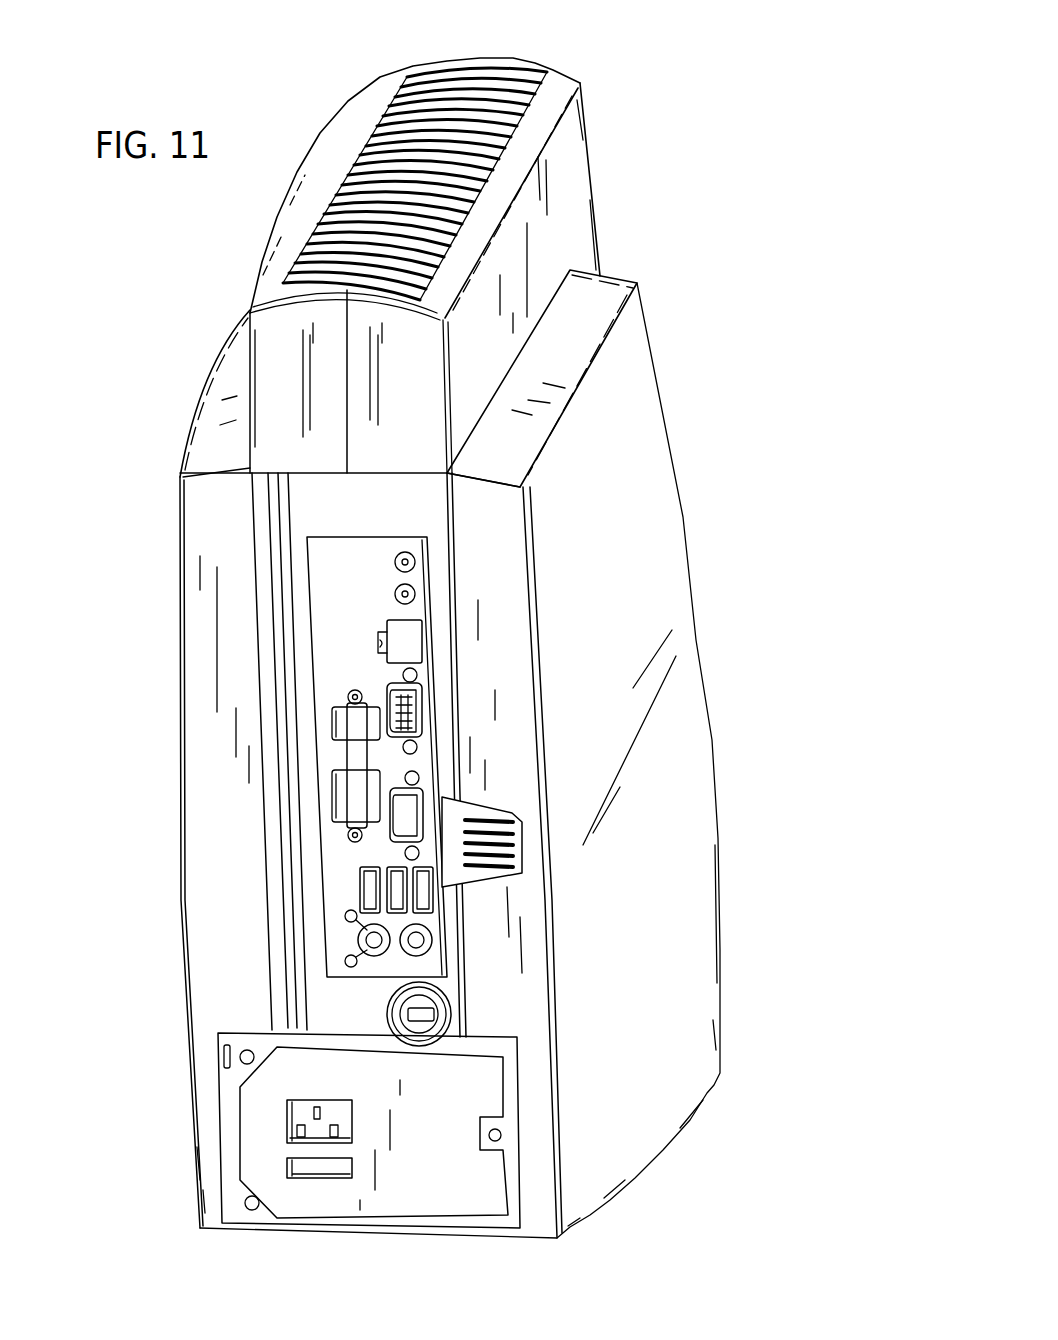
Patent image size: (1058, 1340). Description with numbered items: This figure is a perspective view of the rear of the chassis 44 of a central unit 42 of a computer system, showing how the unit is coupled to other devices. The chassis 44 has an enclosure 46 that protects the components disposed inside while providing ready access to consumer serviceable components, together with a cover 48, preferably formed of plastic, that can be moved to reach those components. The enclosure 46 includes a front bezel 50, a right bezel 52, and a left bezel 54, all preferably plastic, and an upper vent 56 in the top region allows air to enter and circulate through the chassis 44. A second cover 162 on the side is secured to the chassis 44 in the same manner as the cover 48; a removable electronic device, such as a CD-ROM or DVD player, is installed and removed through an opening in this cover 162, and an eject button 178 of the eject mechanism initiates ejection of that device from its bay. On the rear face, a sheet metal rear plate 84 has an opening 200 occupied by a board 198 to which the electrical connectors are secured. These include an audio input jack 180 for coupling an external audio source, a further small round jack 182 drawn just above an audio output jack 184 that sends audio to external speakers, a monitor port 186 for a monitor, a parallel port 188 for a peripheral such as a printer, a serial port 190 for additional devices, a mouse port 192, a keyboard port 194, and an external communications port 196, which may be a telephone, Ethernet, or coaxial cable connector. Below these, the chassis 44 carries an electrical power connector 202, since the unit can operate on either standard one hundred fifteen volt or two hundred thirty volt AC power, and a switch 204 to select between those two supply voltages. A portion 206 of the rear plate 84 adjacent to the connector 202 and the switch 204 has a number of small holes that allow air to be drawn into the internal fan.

The central unit 42 is at (489, 42).
The chassis 44 is at (611, 274).
The enclosure 46 is at (566, 155).
The cover 48 is at (176, 576).
The front bezel 50 is at (558, 73).
The right bezel 52 is at (270, 337).
The left bezel 54 is at (565, 222).
The upper vent 56 is at (385, 130).
The rear plate 84 is at (338, 495).
The cover 162 is at (658, 479).
The eject button 178 is at (500, 853).
The audio input jack 180 is at (487, 802).
The connector 182 is at (414, 559).
The audio output jack 184 is at (414, 592).
The monitor port 186 is at (423, 707).
The parallel port 188 is at (350, 746).
The serial port 190 is at (413, 813).
The mouse port 192 is at (378, 955).
The keyboard port 194 is at (427, 947).
The external communications port 196 is at (413, 647).
The board 198 is at (323, 557).
The opening 200 is at (370, 535).
The electrical power connector 202 is at (340, 1117).
The switch 204 is at (330, 1180).
The portion of back plate 206 is at (475, 1205).